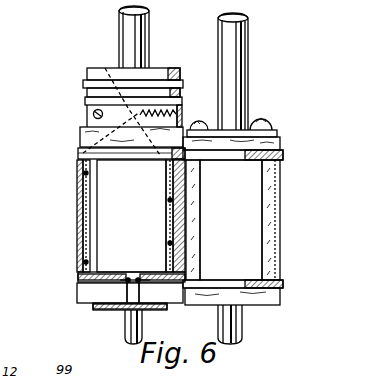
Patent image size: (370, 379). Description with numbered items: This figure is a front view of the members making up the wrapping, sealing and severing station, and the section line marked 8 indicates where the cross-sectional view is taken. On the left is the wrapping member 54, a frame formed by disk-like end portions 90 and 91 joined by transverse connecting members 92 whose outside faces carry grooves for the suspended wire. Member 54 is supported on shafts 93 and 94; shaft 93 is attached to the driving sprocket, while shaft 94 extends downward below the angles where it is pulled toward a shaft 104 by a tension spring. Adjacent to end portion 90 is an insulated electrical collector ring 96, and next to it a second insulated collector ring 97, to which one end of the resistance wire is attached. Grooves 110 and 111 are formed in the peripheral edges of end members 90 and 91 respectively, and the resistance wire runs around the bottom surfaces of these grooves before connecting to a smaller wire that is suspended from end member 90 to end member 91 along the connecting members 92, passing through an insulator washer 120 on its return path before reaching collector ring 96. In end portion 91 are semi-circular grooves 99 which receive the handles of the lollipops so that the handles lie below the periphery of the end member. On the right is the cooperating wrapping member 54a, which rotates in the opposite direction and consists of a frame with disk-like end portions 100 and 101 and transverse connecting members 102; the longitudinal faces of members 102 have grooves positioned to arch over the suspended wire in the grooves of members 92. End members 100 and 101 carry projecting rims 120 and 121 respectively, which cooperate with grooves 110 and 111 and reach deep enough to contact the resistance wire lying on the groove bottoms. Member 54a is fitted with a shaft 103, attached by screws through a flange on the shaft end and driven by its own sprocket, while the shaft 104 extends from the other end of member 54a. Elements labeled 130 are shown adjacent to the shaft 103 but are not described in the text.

The shaft 93 is at (133, 33).
The second insulated electrical collector ring 97 is at (83, 82).
The electrical collector ring 96 is at (90, 100).
The disk-like end portion 90 is at (85, 133).
The groove 110 is at (80, 153).
The wrapping member 54 is at (131, 216).
The transverse connecting members 92 is at (89, 258).
The groove 111 is at (82, 282).
The disk-like end portion 91 is at (88, 298).
The semi-circular grooves 99 is at (133, 292).
The insulator washer / projecting rim 120 is at (160, 308).
The shaft 94 is at (127, 333).
The shaft 103 is at (247, 50).
The cams 130 is at (208, 126).
The disk-like end portion 100 is at (280, 143).
The wrapping member 54a is at (231, 220).
The transverse connecting members 102 is at (195, 228).
The projecting rim 121 is at (284, 284).
The end member 101 is at (278, 294).
The shaft 104 is at (244, 330).
The section line 8- 8 is at (72, 222).